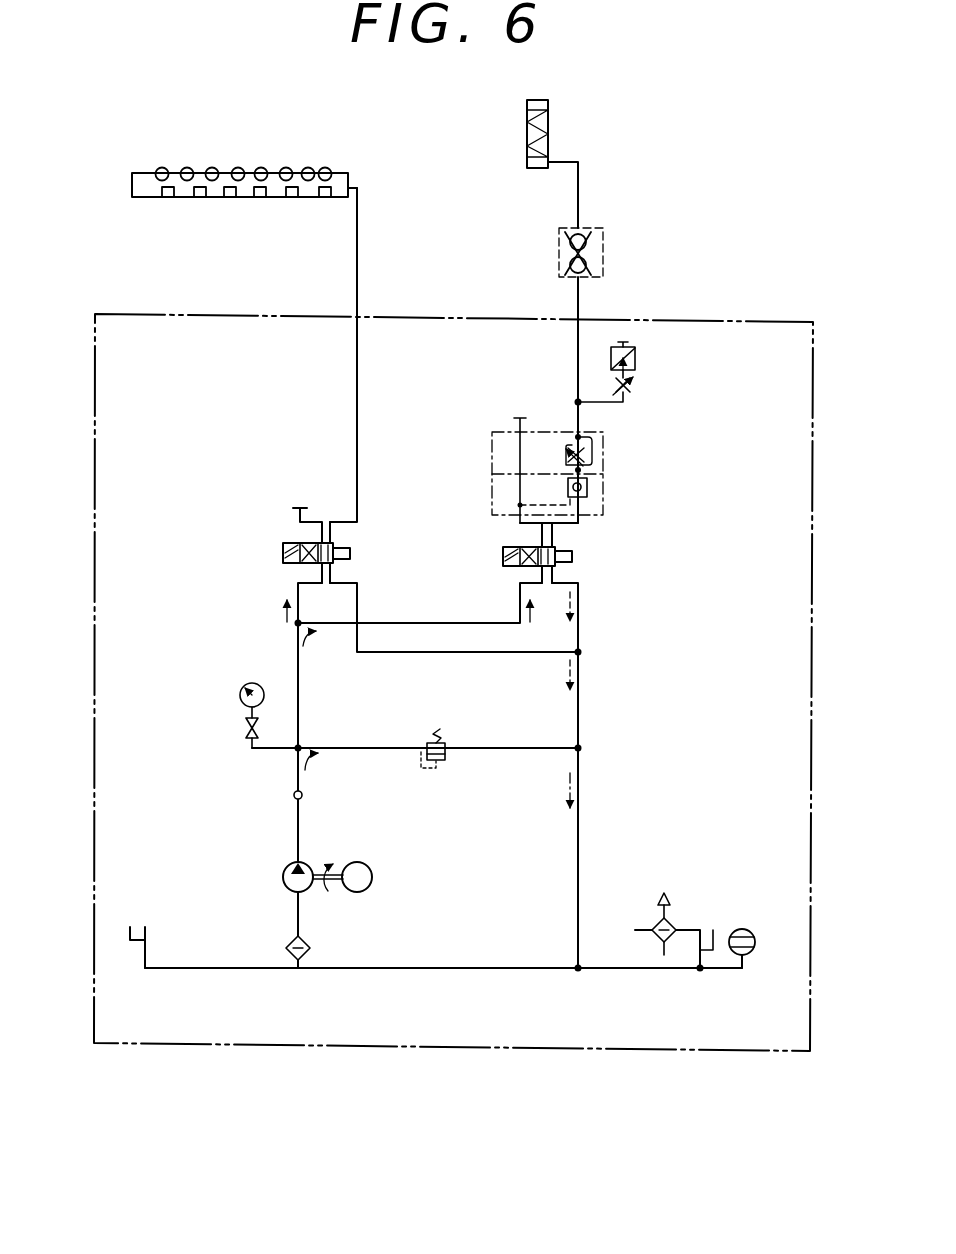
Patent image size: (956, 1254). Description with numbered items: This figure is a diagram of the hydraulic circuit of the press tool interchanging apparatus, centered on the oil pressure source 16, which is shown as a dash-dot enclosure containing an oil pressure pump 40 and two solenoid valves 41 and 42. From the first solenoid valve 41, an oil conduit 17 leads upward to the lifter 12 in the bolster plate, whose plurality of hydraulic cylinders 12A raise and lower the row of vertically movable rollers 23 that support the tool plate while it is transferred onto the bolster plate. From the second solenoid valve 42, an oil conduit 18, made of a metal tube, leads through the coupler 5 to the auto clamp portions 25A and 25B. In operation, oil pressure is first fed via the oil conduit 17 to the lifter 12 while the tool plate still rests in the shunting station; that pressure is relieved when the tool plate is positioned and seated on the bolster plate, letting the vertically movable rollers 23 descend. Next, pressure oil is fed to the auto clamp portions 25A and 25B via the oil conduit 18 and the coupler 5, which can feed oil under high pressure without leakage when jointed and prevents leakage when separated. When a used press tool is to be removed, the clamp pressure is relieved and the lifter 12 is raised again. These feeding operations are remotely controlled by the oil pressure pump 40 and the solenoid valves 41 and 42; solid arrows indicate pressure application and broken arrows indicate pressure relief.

The lifter 12 is at (135, 197).
The hydraulic cylinder 12A is at (228, 198).
The vertically movable roller 23 is at (296, 166).
The auto clamp portion 25A is at (549, 128).
The auto clamp portion 25B is at (614, 164).
The coupler 5 is at (604, 252).
The oil pressure source 16 is at (453, 706).
The oil conduit 17 is at (357, 395).
The oil conduit 18 is at (578, 302).
The oil pressure pump 40 is at (283, 878).
The solenoid valve 41 is at (350, 559).
The solenoid valve 42 is at (556, 549).